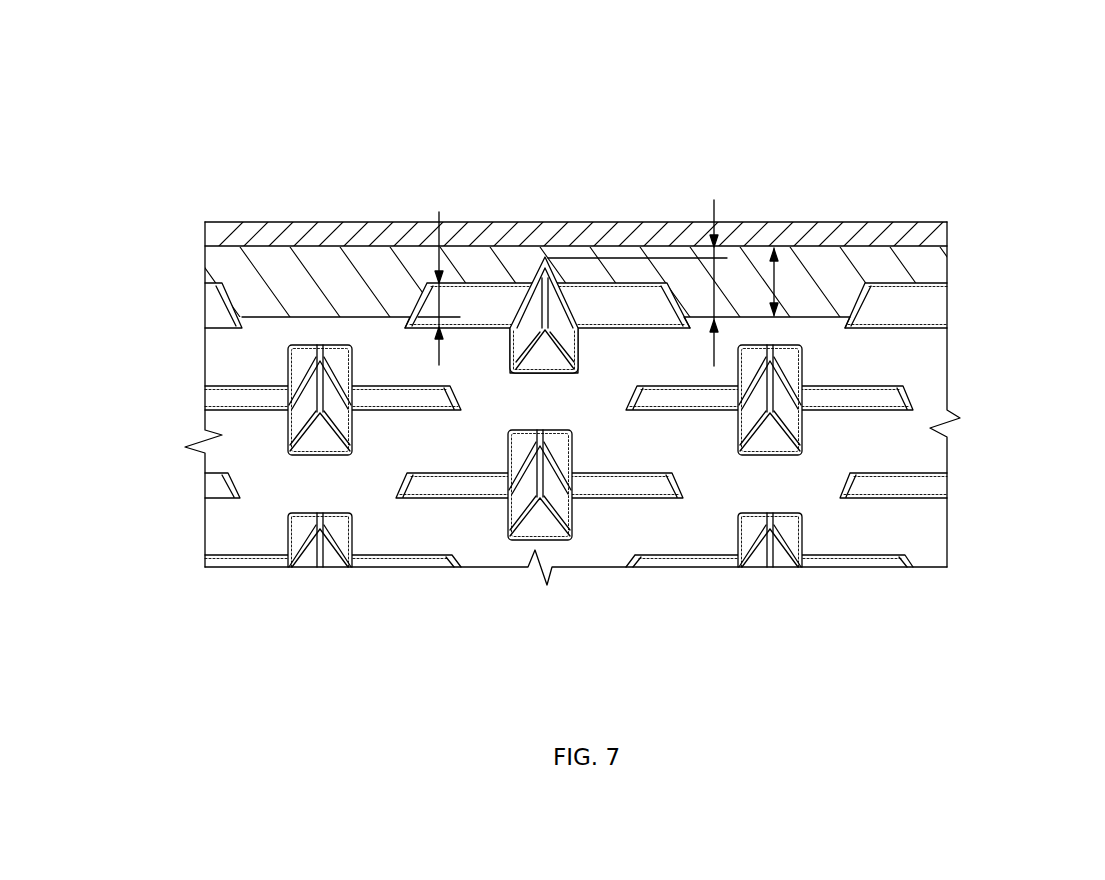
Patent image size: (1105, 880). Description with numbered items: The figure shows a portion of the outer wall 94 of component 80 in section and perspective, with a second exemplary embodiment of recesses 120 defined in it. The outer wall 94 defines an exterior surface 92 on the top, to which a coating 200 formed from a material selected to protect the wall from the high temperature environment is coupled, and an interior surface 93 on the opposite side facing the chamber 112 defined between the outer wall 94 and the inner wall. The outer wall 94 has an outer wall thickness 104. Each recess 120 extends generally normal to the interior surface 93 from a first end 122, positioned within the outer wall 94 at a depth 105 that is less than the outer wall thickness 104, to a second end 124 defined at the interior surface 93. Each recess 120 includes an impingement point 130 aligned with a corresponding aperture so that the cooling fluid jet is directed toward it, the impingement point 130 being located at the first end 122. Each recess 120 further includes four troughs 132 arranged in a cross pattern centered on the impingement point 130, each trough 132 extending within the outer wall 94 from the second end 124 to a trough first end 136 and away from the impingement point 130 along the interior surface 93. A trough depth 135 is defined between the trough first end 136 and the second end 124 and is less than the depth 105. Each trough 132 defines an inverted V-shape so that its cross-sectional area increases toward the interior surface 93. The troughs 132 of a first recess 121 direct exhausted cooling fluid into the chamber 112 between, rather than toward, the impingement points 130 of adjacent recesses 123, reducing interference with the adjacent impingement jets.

The component 80 is at (924, 114).
The exterior surface 92 is at (858, 246).
The interior surface 93 is at (901, 366).
The outer wall 94 is at (948, 268).
The outer wall thickness 104 is at (776, 276).
The depth 105 is at (716, 290).
The chamber 112 is at (823, 637).
The recesses 120 is at (566, 474).
The first recess 121 is at (592, 483).
The first end 122 is at (551, 244).
The adjacent recesses 123 is at (232, 395).
The second end 124 is at (392, 323).
The impingement point 130 is at (312, 392).
The trough 132 is at (648, 483).
The trough depth 135 is at (423, 283).
The trough first end 136 is at (487, 273).
The coating 200 is at (950, 229).